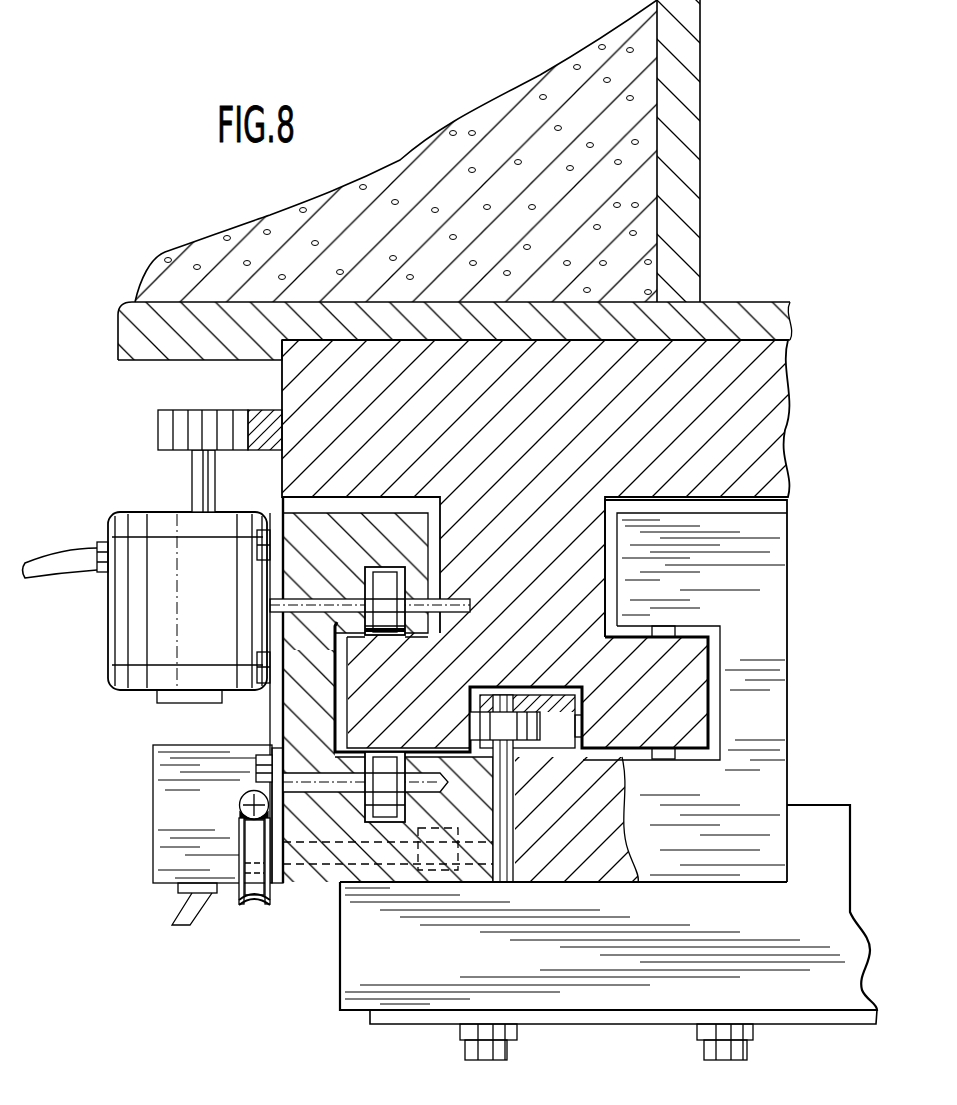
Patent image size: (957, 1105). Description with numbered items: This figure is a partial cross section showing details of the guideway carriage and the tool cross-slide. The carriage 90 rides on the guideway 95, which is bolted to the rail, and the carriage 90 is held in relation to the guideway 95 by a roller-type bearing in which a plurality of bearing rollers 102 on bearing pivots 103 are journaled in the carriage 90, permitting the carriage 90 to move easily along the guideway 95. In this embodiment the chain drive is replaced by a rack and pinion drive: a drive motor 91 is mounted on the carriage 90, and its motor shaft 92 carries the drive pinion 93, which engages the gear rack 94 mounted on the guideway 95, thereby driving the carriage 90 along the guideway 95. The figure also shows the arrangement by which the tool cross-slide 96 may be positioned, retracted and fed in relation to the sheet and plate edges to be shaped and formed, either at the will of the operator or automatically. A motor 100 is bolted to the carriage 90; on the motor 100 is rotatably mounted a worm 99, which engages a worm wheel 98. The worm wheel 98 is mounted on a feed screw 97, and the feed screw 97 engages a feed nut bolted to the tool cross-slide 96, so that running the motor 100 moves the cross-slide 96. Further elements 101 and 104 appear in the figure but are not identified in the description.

The carriage 90 is at (775, 560).
The drive motor 91 is at (122, 617).
The motor shaft 92 is at (197, 500).
The drive pinion 93 is at (173, 433).
The gear rack 94 is at (258, 424).
The guideway 95 is at (775, 408).
The tool cross-slide 96 is at (653, 1000).
The feed screw 97 is at (279, 868).
The worm wheel 98 is at (262, 902).
The worm 99 is at (240, 807).
The motor 100 is at (165, 848).
The guide channel 101 is at (335, 626).
The bearing rollers 102 is at (388, 608).
The bearing pivots 103 is at (285, 604).
The roller bracket 104 is at (492, 683).